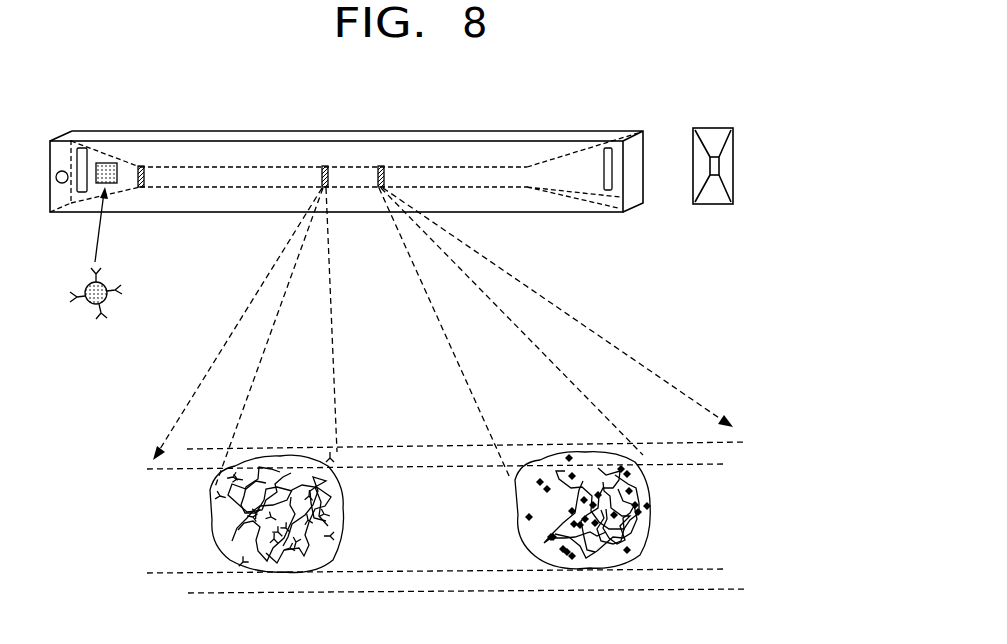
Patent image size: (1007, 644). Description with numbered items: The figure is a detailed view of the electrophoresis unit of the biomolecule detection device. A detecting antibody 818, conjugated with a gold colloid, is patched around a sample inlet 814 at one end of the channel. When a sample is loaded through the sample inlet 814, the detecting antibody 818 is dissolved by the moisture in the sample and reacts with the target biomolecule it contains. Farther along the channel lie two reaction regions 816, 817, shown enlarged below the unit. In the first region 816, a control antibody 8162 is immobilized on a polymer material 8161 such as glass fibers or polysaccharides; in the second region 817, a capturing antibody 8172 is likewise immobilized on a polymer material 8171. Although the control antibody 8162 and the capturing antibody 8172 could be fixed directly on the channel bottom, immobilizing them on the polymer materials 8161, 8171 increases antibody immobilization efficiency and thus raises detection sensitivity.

The sample inlet 814 is at (141, 165).
The first reaction region 816 is at (326, 165).
The second reaction region 817 is at (381, 165).
The detecting antibody 818 is at (88, 302).
The polymer material 8161 is at (327, 498).
The control antibody 8162 is at (332, 460).
The polymer material 8171 is at (647, 535).
The capturing antibody 8172 is at (647, 487).